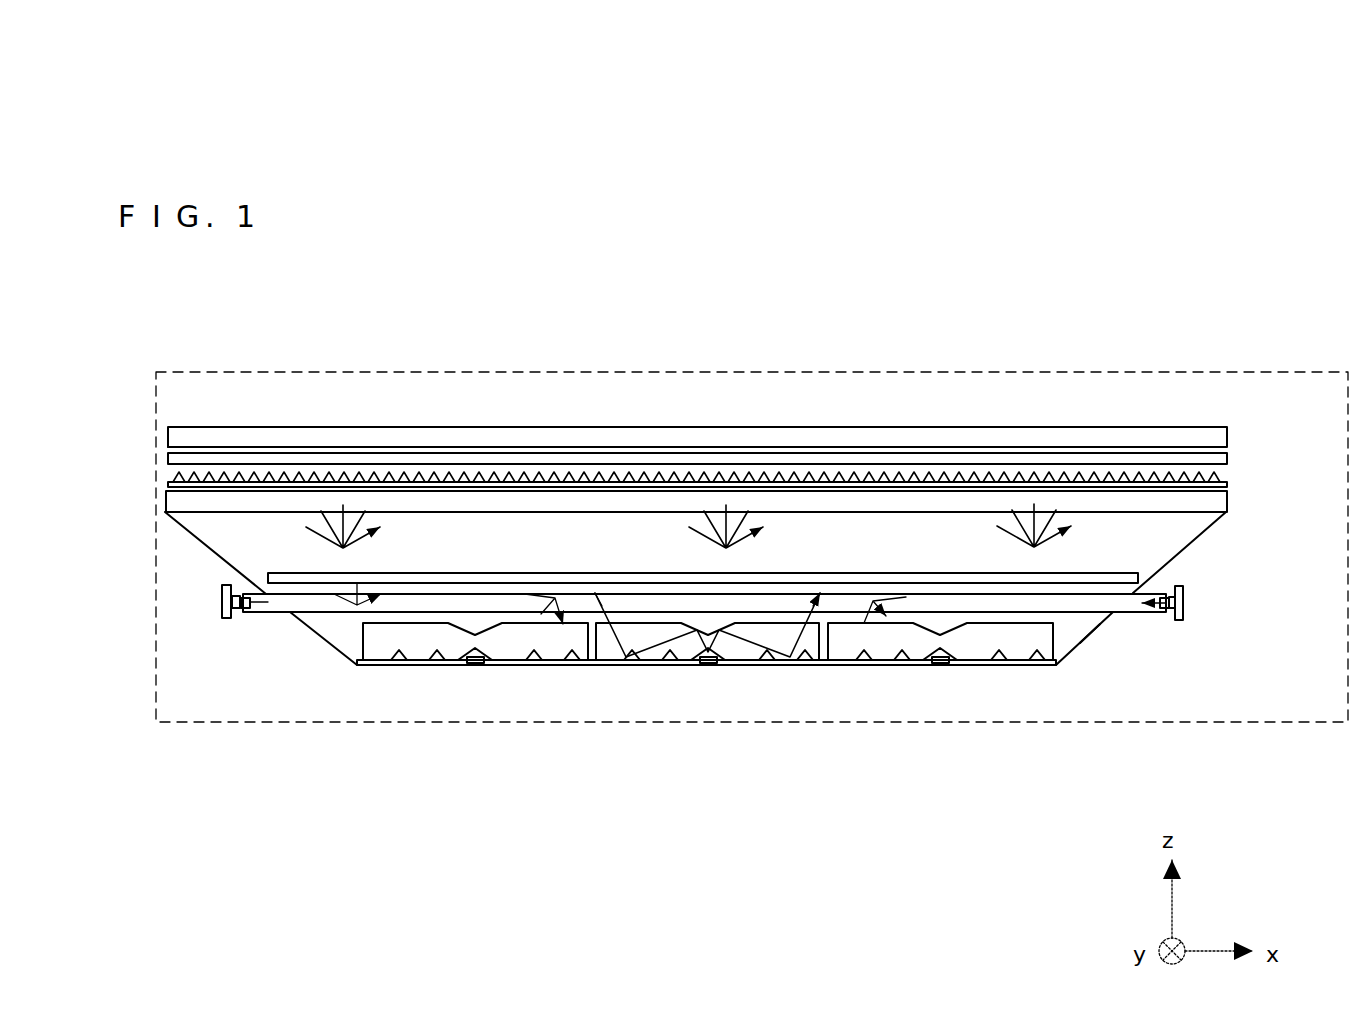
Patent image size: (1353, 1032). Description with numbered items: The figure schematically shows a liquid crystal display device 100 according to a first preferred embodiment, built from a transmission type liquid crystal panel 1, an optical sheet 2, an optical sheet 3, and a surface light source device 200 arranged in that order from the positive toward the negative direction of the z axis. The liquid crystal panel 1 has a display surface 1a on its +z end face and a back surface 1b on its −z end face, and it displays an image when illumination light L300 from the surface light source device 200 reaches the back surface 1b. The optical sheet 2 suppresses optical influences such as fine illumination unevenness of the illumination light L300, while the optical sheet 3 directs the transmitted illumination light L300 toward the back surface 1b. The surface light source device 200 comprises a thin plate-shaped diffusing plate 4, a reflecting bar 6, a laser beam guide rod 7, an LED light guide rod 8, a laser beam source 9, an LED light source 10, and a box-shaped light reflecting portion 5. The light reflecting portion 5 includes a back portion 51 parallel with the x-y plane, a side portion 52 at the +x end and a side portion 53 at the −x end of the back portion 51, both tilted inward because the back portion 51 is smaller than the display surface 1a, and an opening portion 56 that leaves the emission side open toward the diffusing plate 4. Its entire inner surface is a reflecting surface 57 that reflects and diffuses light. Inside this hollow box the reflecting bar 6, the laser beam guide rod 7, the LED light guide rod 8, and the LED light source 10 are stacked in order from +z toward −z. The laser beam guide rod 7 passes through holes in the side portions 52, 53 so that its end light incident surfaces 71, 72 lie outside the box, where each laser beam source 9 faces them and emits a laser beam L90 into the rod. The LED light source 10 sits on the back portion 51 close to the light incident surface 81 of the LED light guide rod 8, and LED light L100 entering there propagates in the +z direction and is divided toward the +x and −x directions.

The liquid crystal panel 1 is at (1222, 426).
The display surface 1a is at (788, 427).
The back surface 1b is at (183, 448).
The optical sheet 2 is at (1228, 458).
The optical sheet 3 is at (1228, 484).
The diffusing plate 4 is at (1218, 498).
The light reflecting portion 5 is at (1160, 553).
The reflecting bar 6 is at (276, 572).
The laser beam guide rod 7 is at (1128, 613).
The LED light guide rod 8 is at (575, 654).
The laser beam source 9 is at (221, 600).
The LED light source 10 is at (477, 665).
The back portion 51 is at (798, 666).
The side portion 52 is at (1093, 633).
The side portion 53 is at (317, 636).
The opening portion 56 is at (515, 517).
The reflecting surface 57 is at (1073, 638).
The light incident surface 71 is at (1164, 609).
The light incident surface 72 is at (236, 611).
The light incident surface 81 is at (467, 665).
The liquid crystal display device 100 is at (1222, 371).
The surface light source device 200 is at (1246, 585).
The laser beam L90 is at (245, 612).
The LED light L100 is at (747, 646).
The illumination light L300 is at (357, 545).